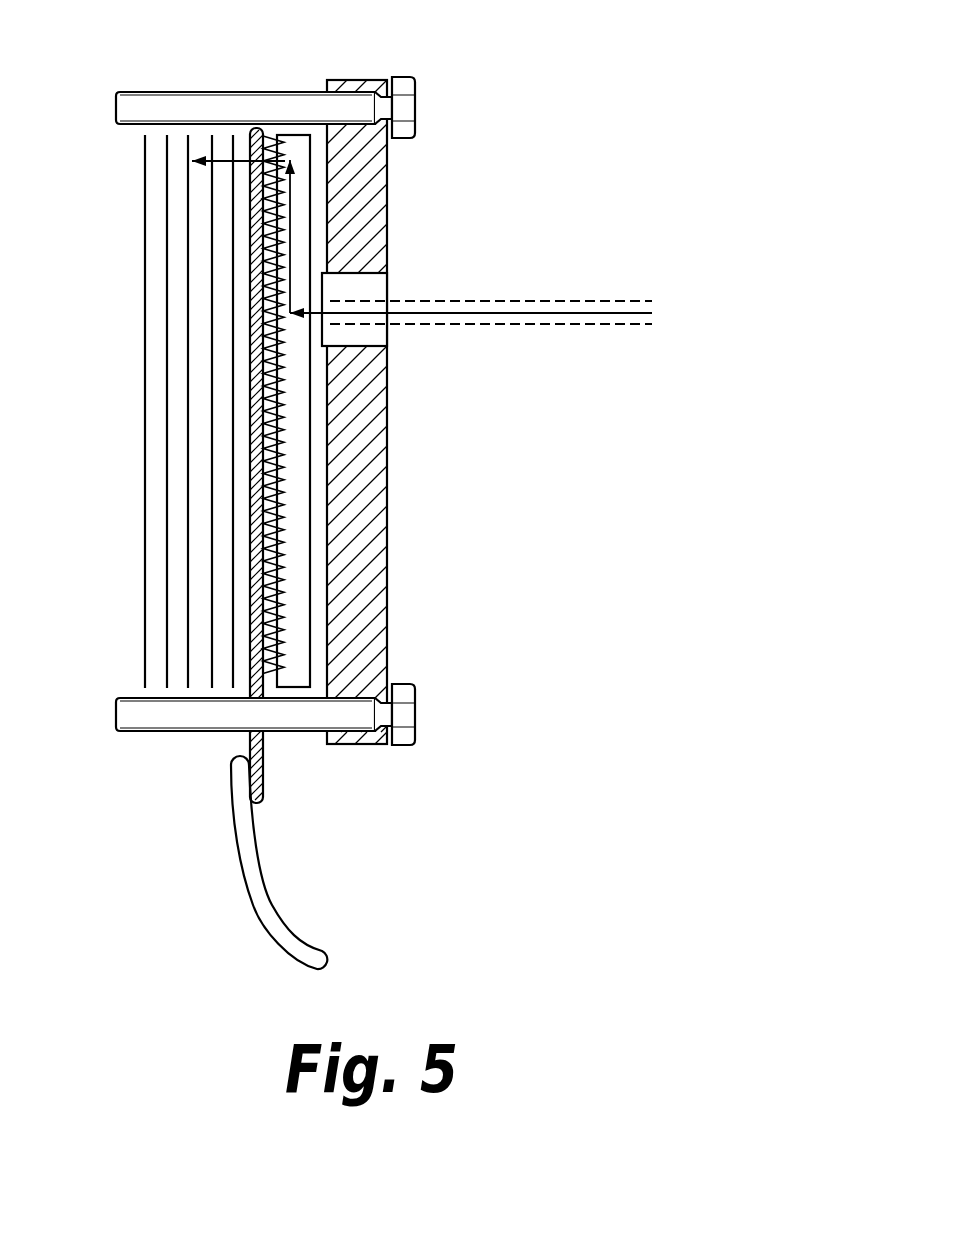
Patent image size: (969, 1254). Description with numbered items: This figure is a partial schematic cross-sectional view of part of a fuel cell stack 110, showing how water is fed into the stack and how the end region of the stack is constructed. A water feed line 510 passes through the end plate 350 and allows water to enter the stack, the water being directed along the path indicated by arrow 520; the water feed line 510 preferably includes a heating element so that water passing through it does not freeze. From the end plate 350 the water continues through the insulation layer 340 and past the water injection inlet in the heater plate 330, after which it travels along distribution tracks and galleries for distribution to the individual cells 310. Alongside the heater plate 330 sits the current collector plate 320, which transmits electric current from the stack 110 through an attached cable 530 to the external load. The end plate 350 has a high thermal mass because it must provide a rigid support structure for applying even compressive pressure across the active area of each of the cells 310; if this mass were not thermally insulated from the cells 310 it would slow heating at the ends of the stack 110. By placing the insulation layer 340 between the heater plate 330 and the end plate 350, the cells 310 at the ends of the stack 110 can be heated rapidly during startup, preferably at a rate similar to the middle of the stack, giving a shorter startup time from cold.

The fuel cell stack 110 is at (475, 92).
The cells 310 is at (167, 158).
The current collector plate 320 is at (268, 785).
The heater plate 330 is at (283, 508).
The insulation layer 340 is at (302, 430).
The end plate 350 is at (358, 170).
The water feed line 510 is at (518, 325).
The arrow 520 is at (425, 313).
The cable 530 is at (297, 952).